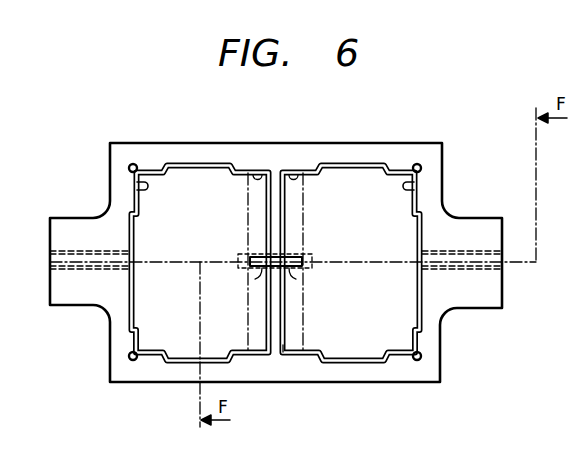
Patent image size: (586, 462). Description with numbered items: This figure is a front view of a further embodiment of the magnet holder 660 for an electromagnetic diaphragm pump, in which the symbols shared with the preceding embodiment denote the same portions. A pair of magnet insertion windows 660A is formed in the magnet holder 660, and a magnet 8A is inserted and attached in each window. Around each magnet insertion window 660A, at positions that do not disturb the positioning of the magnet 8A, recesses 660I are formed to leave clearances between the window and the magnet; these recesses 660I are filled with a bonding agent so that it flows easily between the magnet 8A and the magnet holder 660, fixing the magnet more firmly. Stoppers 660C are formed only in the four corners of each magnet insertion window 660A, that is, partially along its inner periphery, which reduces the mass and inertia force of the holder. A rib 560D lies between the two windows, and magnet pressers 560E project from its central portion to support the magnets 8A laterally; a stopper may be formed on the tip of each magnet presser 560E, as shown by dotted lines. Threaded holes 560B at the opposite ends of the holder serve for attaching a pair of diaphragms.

The magnet holder 660 is at (380, 143).
The magnet insertion window 660A is at (247, 174).
The stopper 660C is at (138, 186).
The recess 660I is at (130, 300).
The magnet 8A is at (268, 358).
The magnet presser 560E is at (300, 268).
The rib 560D is at (288, 364).
The threaded hole 560B is at (90, 256).